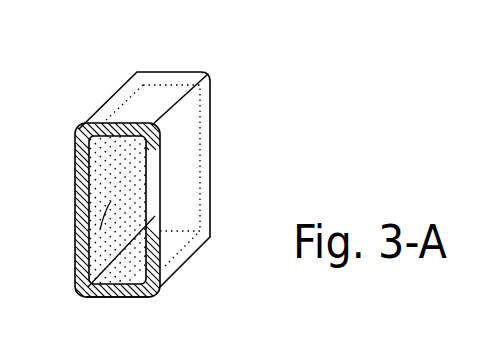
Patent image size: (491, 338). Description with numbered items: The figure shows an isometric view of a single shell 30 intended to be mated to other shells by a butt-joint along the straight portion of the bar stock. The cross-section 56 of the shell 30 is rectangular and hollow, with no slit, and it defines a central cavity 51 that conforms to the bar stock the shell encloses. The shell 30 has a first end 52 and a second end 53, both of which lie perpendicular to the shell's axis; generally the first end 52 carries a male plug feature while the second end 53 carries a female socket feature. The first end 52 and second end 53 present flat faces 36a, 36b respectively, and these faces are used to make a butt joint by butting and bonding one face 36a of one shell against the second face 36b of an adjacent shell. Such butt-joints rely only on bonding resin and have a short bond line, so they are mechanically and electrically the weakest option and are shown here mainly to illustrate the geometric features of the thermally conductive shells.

The shell 30 is at (102, 69).
The second end 53 is at (180, 67).
The cross-section 56 is at (160, 173).
The flat face 36b is at (205, 125).
The flat face 36a is at (150, 230).
The central cavity 51 is at (86, 223).
The first end 52 is at (160, 292).